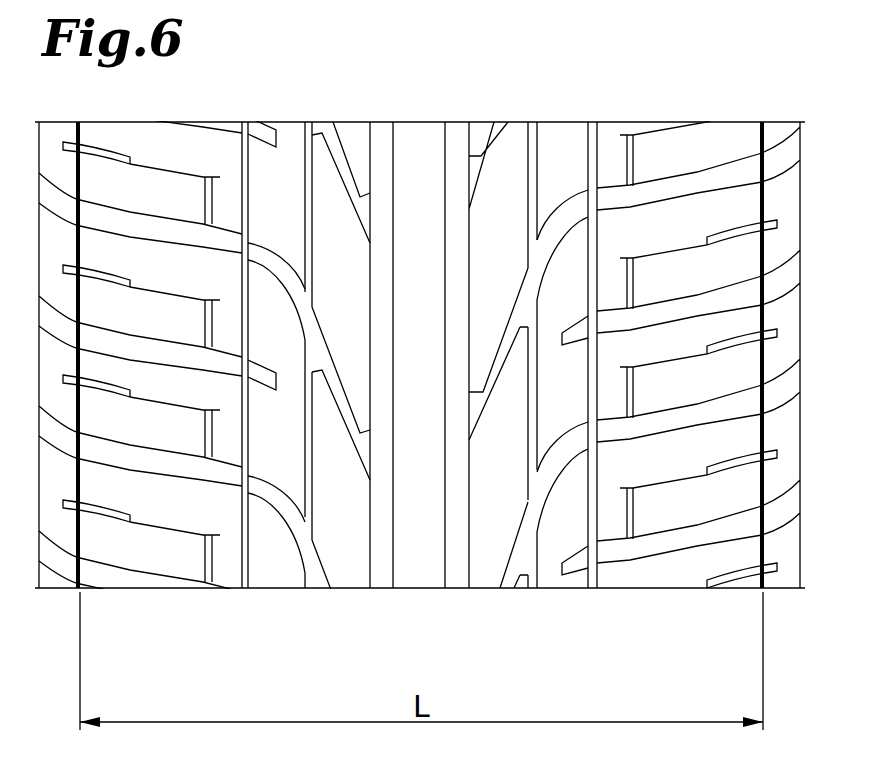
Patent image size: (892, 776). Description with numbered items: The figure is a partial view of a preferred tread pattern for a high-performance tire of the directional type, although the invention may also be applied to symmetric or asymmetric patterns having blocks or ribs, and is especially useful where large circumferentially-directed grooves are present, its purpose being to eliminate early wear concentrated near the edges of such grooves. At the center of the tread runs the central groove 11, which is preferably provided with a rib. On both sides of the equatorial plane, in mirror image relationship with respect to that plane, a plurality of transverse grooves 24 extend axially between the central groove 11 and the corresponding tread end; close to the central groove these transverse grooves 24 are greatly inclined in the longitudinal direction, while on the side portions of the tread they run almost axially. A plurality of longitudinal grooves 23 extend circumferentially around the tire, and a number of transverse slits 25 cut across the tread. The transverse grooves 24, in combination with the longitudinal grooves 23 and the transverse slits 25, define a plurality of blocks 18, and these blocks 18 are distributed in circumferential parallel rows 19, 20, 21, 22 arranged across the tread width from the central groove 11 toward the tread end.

The central groove 11 is at (424, 118).
The blocks 18 is at (515, 540).
The circumferential row of blocks 19 is at (521, 118).
The circumferential row of blocks 20 is at (573, 118).
The circumferential row of blocks 21 is at (618, 118).
The circumferential row of blocks 22 is at (748, 118).
The longitudinal grooves 23 is at (588, 272).
The transverse grooves 24 is at (513, 307).
The transverse slits 25 is at (668, 247).